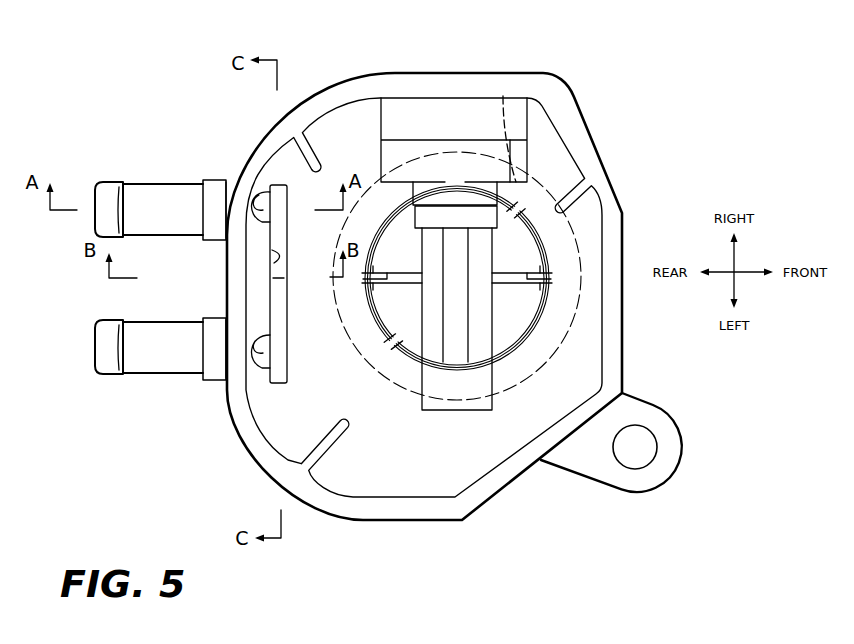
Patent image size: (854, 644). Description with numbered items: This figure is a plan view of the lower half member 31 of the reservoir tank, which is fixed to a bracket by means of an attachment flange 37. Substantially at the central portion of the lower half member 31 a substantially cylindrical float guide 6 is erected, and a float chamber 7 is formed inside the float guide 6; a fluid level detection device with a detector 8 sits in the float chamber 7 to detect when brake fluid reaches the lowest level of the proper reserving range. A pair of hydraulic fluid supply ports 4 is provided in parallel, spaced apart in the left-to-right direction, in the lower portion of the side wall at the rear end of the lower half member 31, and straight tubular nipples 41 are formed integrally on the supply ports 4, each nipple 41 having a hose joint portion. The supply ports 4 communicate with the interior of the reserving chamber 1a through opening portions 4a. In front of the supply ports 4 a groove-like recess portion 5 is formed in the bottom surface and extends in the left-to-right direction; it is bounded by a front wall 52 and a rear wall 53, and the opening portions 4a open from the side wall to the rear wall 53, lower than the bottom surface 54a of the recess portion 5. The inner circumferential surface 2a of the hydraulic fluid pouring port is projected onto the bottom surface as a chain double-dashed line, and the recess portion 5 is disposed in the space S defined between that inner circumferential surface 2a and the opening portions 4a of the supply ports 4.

The lower half member 31 is at (594, 90).
The attachment flange 37 is at (657, 417).
The reserving chamber 1a is at (362, 130).
The inner circumferential surface 2a is at (503, 96).
The hydraulic fluid supply port 4 is at (219, 172).
The opening portion 4a is at (253, 181).
The nipple 41 is at (148, 184).
The recess portion 5 is at (256, 322).
The front wall 52 is at (284, 302).
The rear wall 53 is at (270, 258).
The bottom surface 54a is at (286, 218).
The float guide 6 is at (540, 328).
The float chamber 7 is at (505, 324).
The detector 8 is at (536, 290).
The space S is at (298, 404).